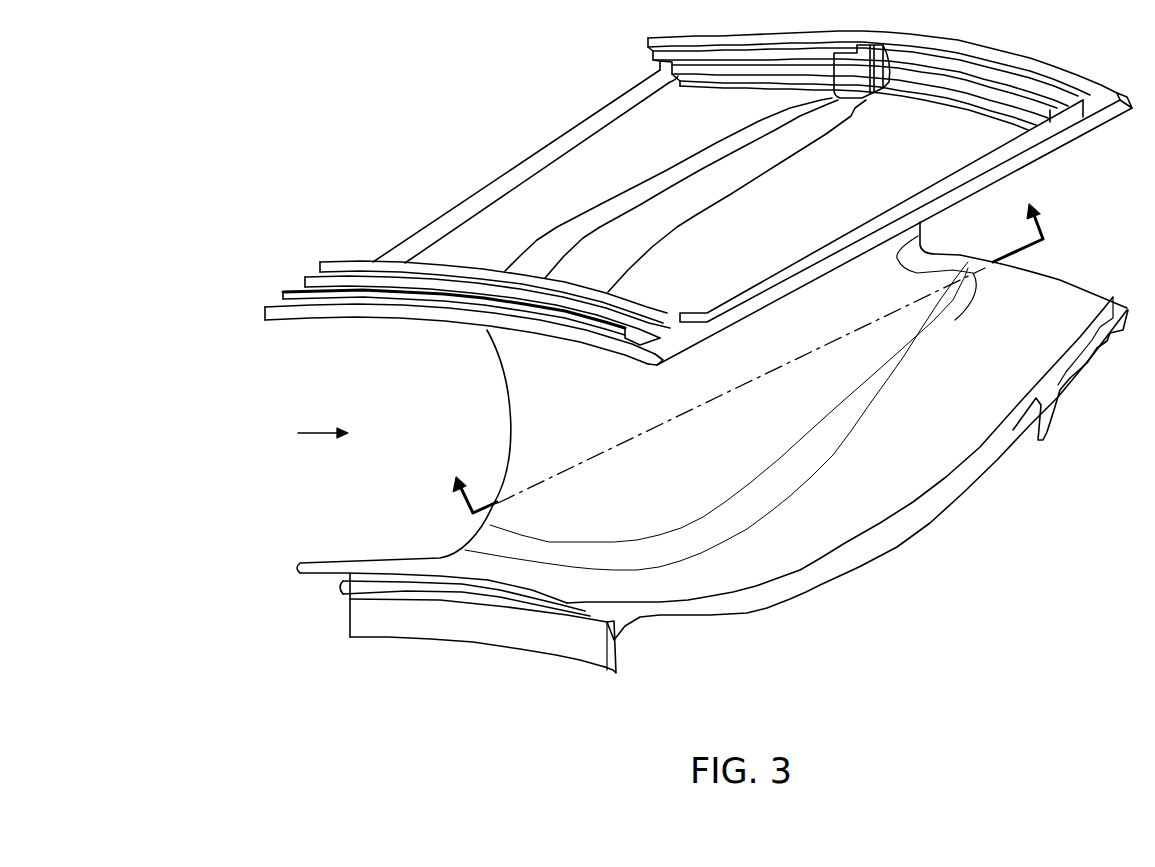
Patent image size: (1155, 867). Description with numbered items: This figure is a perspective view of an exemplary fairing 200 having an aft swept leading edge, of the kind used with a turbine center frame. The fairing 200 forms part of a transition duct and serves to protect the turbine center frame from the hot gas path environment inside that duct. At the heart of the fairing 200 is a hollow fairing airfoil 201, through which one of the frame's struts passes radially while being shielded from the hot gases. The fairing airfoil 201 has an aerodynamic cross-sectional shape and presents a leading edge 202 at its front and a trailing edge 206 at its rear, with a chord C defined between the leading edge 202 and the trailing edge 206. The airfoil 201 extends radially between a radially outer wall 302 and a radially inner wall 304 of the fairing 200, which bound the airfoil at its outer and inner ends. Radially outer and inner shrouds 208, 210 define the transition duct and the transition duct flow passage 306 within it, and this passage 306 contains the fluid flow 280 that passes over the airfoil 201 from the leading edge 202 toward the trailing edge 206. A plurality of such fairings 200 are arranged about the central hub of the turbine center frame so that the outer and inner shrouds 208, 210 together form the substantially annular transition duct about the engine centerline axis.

The fairing 200 is at (446, 666).
The fairing airfoil 201 is at (793, 407).
The leading edge 202 is at (510, 463).
The trailing edge 206 is at (912, 243).
The radially outer shroud 208 is at (360, 317).
The radially inner shroud 210 is at (560, 623).
The fluid flow 280 is at (313, 436).
The radially outer wall 302 is at (1053, 145).
The radially inner wall 304 is at (973, 457).
The transition duct flow passage 306 is at (1010, 338).
The chord C is at (662, 423).